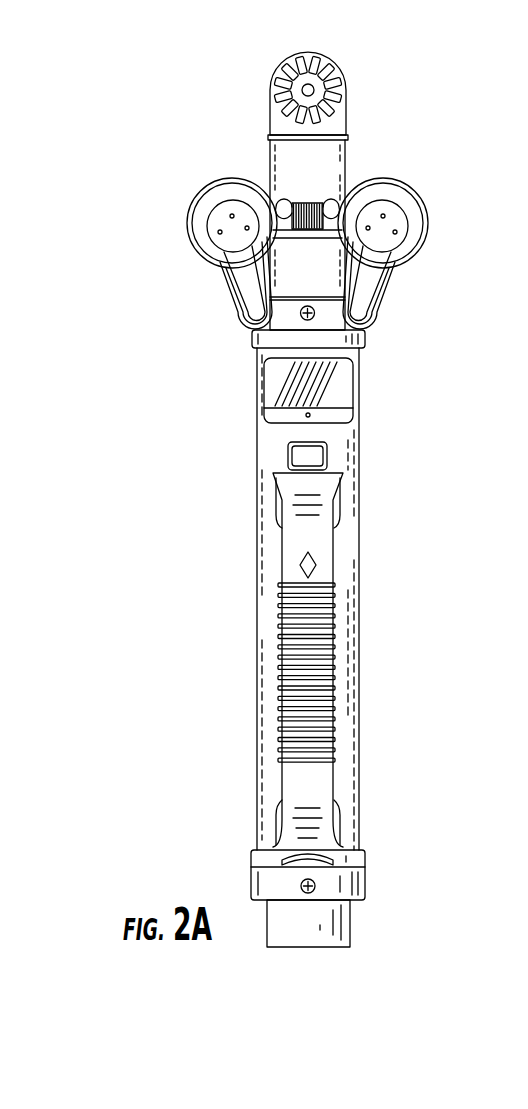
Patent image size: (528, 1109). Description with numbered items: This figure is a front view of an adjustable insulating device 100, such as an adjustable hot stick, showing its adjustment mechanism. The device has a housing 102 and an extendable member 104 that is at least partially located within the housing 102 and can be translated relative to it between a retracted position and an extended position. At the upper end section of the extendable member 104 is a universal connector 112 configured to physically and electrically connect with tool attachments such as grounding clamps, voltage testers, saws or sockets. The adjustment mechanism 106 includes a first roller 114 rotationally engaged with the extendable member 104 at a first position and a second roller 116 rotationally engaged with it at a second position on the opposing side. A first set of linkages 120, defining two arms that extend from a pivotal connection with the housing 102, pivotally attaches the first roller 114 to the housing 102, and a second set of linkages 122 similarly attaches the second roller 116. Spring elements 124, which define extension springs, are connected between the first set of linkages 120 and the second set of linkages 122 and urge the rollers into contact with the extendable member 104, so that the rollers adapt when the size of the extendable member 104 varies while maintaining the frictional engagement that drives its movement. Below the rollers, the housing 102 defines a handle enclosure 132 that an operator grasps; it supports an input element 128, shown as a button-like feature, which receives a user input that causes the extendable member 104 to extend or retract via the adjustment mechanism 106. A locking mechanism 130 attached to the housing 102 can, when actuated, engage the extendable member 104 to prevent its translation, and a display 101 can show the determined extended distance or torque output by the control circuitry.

The adjustable insulating device 100 is at (163, 105).
The universal connector 112 is at (262, 86).
The extendable member 104 is at (268, 170).
The spring elements 124 is at (318, 196).
The first roller 114 is at (186, 194).
The second roller 116 is at (425, 190).
The adjustment mechanism 106 is at (452, 226).
The first set of linkages 120 is at (228, 291).
The second set of linkages 122 is at (388, 281).
The display 101 is at (268, 386).
The locking mechanism 130 is at (282, 454).
The input element 128 is at (295, 561).
The housing 102 is at (410, 952).
The handle enclosure 132 is at (362, 688).